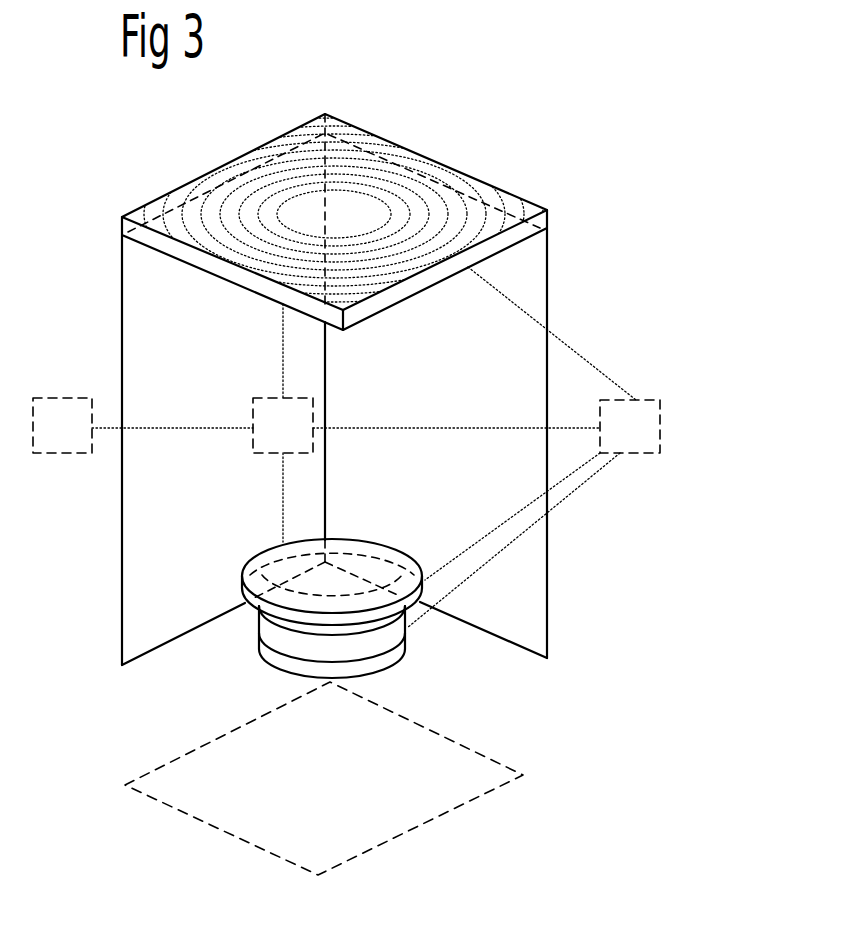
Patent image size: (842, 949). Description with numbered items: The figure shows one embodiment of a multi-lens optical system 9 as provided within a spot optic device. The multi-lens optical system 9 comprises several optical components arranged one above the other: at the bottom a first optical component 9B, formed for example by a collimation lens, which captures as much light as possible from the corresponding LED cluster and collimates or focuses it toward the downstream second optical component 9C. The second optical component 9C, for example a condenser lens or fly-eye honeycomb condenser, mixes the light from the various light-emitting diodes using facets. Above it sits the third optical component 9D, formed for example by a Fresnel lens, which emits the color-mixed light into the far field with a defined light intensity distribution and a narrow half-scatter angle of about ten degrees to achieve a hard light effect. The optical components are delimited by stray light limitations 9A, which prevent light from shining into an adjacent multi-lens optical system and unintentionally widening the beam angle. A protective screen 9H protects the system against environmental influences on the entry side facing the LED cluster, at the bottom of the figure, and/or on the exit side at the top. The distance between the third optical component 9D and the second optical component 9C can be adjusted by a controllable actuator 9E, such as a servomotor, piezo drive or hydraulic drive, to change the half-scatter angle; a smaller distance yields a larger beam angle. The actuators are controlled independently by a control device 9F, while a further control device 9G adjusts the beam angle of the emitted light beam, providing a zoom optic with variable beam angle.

The multi-lens optical system 9 is at (526, 80).
The stray light limitation 9A is at (172, 625).
The first optical component 9B is at (425, 672).
The second optical component 9C is at (400, 566).
The third optical component 9D is at (456, 193).
The actuator 9E is at (299, 442).
The control device 9F is at (79, 442).
The control device 9G is at (647, 442).
The protective screen 9H is at (485, 762).